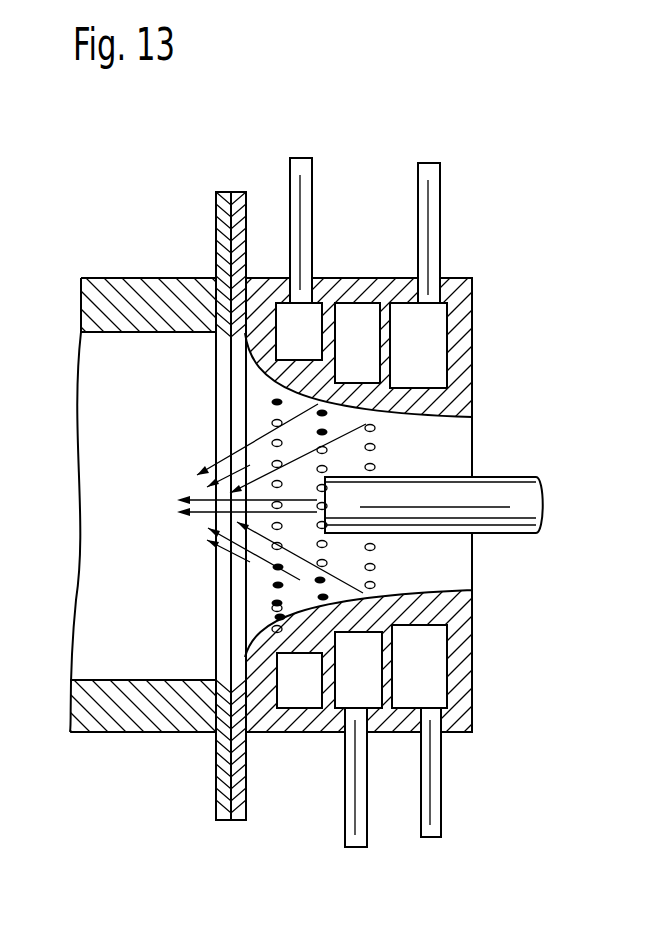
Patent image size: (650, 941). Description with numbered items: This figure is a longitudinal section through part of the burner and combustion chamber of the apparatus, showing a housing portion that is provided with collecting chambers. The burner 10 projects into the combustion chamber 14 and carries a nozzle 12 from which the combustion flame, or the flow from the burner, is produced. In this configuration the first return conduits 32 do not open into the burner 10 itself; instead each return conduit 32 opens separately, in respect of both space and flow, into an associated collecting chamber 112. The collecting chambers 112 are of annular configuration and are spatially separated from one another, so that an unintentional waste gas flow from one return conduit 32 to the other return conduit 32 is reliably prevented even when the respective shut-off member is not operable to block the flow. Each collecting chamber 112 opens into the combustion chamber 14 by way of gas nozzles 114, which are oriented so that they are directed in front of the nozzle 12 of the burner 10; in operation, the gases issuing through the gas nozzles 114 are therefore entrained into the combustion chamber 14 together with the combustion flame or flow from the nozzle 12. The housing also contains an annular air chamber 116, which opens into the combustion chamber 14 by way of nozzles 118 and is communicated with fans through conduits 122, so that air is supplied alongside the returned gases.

The burner 10 is at (507, 485).
The nozzle 12 is at (333, 512).
The combustion chamber 14 is at (120, 575).
The first return conduit 32 is at (300, 193).
The collecting chamber 112 is at (360, 323).
The gas nozzle 114 is at (200, 427).
The annular air chamber 116 is at (430, 343).
The nozzle 118 is at (400, 392).
The conduit 122 is at (430, 197).